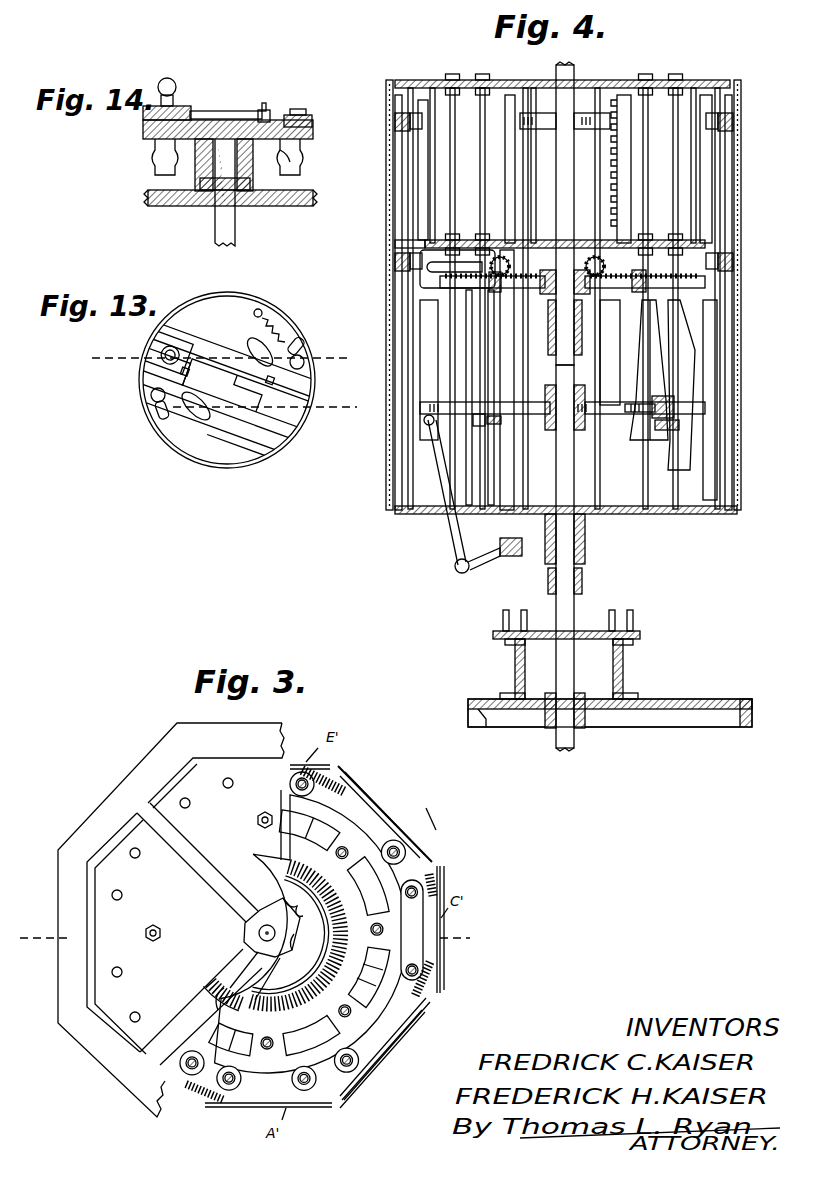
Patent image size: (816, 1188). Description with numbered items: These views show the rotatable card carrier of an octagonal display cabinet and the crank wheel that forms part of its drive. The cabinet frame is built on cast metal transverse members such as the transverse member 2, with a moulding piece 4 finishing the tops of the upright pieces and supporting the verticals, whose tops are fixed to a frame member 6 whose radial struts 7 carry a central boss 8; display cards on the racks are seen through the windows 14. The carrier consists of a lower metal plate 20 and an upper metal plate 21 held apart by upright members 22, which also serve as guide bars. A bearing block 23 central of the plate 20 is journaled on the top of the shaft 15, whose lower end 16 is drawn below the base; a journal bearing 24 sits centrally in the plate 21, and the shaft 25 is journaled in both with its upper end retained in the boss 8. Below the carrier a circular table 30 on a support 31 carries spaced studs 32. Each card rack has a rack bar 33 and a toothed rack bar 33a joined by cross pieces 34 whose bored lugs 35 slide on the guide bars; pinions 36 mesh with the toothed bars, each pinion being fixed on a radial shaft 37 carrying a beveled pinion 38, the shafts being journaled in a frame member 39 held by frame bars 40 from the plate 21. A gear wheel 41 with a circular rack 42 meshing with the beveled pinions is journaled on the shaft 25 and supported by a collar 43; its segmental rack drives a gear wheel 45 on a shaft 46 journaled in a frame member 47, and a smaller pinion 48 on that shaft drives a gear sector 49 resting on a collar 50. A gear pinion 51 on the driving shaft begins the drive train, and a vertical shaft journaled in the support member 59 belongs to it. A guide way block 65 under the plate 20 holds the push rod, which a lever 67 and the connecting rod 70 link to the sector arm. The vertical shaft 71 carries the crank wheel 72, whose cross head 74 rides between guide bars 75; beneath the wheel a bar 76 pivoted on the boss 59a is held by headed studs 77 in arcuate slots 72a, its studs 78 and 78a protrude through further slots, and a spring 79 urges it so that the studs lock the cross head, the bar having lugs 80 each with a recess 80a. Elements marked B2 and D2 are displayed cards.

In FIG. 4, the transverse member 2 is at (700, 700).
In FIG. 3, the moulding piece 4 is at (246, 939).
In FIG. 3, the frame member 6 is at (158, 755).
In FIG. 3, the radial struts 7 is at (195, 860).
In FIG. 3, the central boss 8 is at (240, 930).
In FIG. 13, the windows 14 is at (207, 378).
In FIG. 4, the shaft 15 is at (558, 652).
In FIG. 4, the shaft foot 16 is at (552, 732).
In FIG. 4, the metal plate 20 is at (400, 516).
In FIG. 4, the metal plate 21 is at (400, 78).
In FIG. 4, the upright members 22 is at (735, 72).
In FIG. 3, the upright members 22 is at (122, 893).
In FIG. 4, the bearing block 23 is at (588, 530).
In FIG. 4, the journal bearing 24 is at (575, 80).
In FIG. 4, the shaft 25 is at (560, 460).
In FIG. 4, the circular table 30 is at (641, 636).
In FIG. 4, the support 31 is at (623, 672).
In FIG. 4, the studs 32 is at (633, 612).
In FIG. 4, the rack bar 33 is at (505, 175).
In FIG. 3, the rack bar 33 is at (436, 862).
In FIG. 4, the toothed rack bar 33a is at (625, 170).
In FIG. 3, the toothed rack bar 33a is at (440, 970).
In FIG. 4, the cross pieces 34 is at (490, 140).
In FIG. 4, the lugs 35 is at (437, 78).
In FIG. 3, the pinions 36 is at (332, 774).
In FIG. 4, the shaft 37 is at (432, 270).
In FIG. 3, the shaft 37 is at (226, 1036).
In FIG. 3, the beveled pinion 38 is at (332, 965).
In FIG. 4, the frame member 39 is at (655, 238).
In FIG. 3, the frame member 39 is at (360, 838).
In FIG. 4, the frame bars 40 is at (455, 130).
In FIG. 3, the frame bars 40 is at (262, 828).
In FIG. 4, the gear wheel 41 is at (615, 352).
In FIG. 3, the circular rack 42 is at (258, 986).
In FIG. 4, the collar 43 is at (556, 330).
In FIG. 4, the gear wheel 45 is at (659, 370).
In FIG. 4, the shaft 46 is at (660, 392).
In FIG. 4, the frame member 47 is at (690, 350).
In FIG. 4, the pinion 48 is at (675, 400).
In FIG. 4, the gear sector 49 is at (514, 400).
In FIG. 4, the collar 50 is at (545, 428).
In FIG. 4, the gear pinion 51 is at (548, 582).
In FIG. 14, the support member 59 is at (300, 206).
In FIG. 14, the boss 59a is at (208, 182).
In FIG. 4, the guide way block 65 is at (508, 562).
In FIG. 4, the lever 67 is at (445, 520).
In FIG. 4, the connecting rod 70 is at (488, 426).
In FIG. 14, the vertical shaft 71 is at (216, 222).
In FIG. 14, the crank wheel 72 is at (143, 128).
In FIG. 13, the crank wheel 72 is at (218, 464).
In FIG. 13, the arcuate slots 72a is at (302, 338).
In FIG. 14, the cross head 74 is at (192, 110).
In FIG. 13, the cross head 74 is at (200, 345).
In FIG. 13, the guide bars 75 is at (80, 300).
In FIG. 14, the bar 76 is at (196, 150).
In FIG. 14, the headed studs 77 is at (300, 114).
In FIG. 13, the headed studs 77 is at (305, 358).
In FIG. 13, the stud 78 is at (184, 371).
In FIG. 14, the stud 78a is at (267, 105).
In FIG. 13, the stud 78a is at (270, 380).
In FIG. 13, the spring 79 is at (275, 312).
In FIG. 14, the lugs 80 is at (160, 170).
In FIG. 14, the recess 80a is at (296, 152).
In FIG. 3, the bar B2 is at (402, 1052).
In FIG. 3, the bar D2 is at (402, 838).